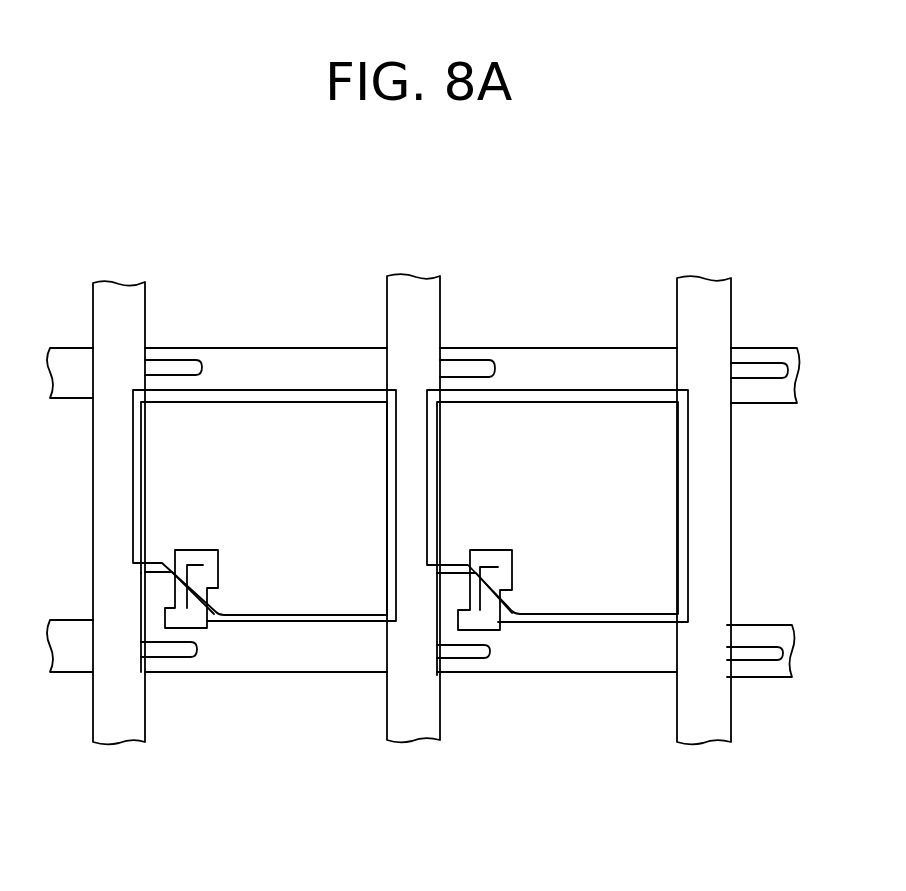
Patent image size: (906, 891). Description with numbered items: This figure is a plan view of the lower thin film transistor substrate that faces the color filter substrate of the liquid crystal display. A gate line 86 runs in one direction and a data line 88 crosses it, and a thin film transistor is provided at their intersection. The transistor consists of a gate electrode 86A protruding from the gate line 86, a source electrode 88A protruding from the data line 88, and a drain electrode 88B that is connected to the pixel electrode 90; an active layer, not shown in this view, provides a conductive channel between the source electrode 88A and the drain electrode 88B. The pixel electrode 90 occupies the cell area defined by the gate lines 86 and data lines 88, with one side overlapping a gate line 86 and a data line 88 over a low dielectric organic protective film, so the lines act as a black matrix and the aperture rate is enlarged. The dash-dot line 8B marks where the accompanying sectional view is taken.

The gate line 86 is at (65, 667).
The gate electrode 86A is at (152, 578).
The data line 88 is at (97, 503).
The source electrode 88A is at (168, 653).
The drain electrode 88B is at (218, 563).
The pixel electrode 90 is at (140, 442).
The line 8B— 8B is at (197, 484).